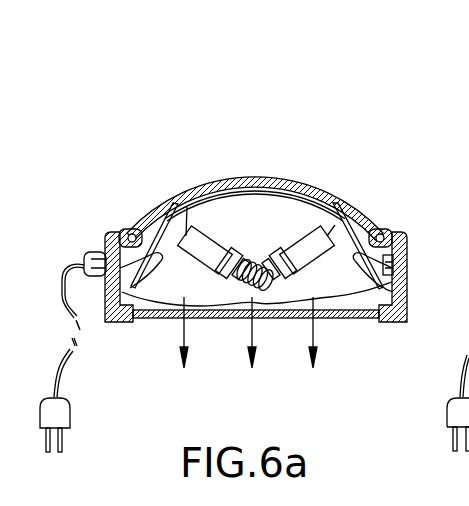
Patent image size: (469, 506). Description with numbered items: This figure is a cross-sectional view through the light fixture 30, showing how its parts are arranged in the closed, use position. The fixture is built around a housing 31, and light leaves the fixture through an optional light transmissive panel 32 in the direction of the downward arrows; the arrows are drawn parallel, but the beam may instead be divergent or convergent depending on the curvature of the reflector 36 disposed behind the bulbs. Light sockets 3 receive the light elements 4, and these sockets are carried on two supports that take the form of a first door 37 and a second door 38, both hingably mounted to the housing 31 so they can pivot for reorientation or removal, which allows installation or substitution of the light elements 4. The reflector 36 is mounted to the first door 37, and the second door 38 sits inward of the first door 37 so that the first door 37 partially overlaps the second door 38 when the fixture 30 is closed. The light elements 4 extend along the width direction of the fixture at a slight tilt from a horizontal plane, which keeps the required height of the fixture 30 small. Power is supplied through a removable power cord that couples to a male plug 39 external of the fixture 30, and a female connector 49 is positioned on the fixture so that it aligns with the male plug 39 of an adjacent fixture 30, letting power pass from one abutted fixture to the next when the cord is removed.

The light fixture 30 is at (110, 101).
The light socket 3 is at (187, 207).
The light element 4 is at (233, 251).
The housing 31 is at (113, 322).
The light transmissive panel 32 is at (325, 318).
The reflector 36 is at (259, 200).
The first door 37 is at (243, 180).
The second door 38 is at (156, 214).
The male plug 39 is at (100, 258).
The female connector 49 is at (395, 265).